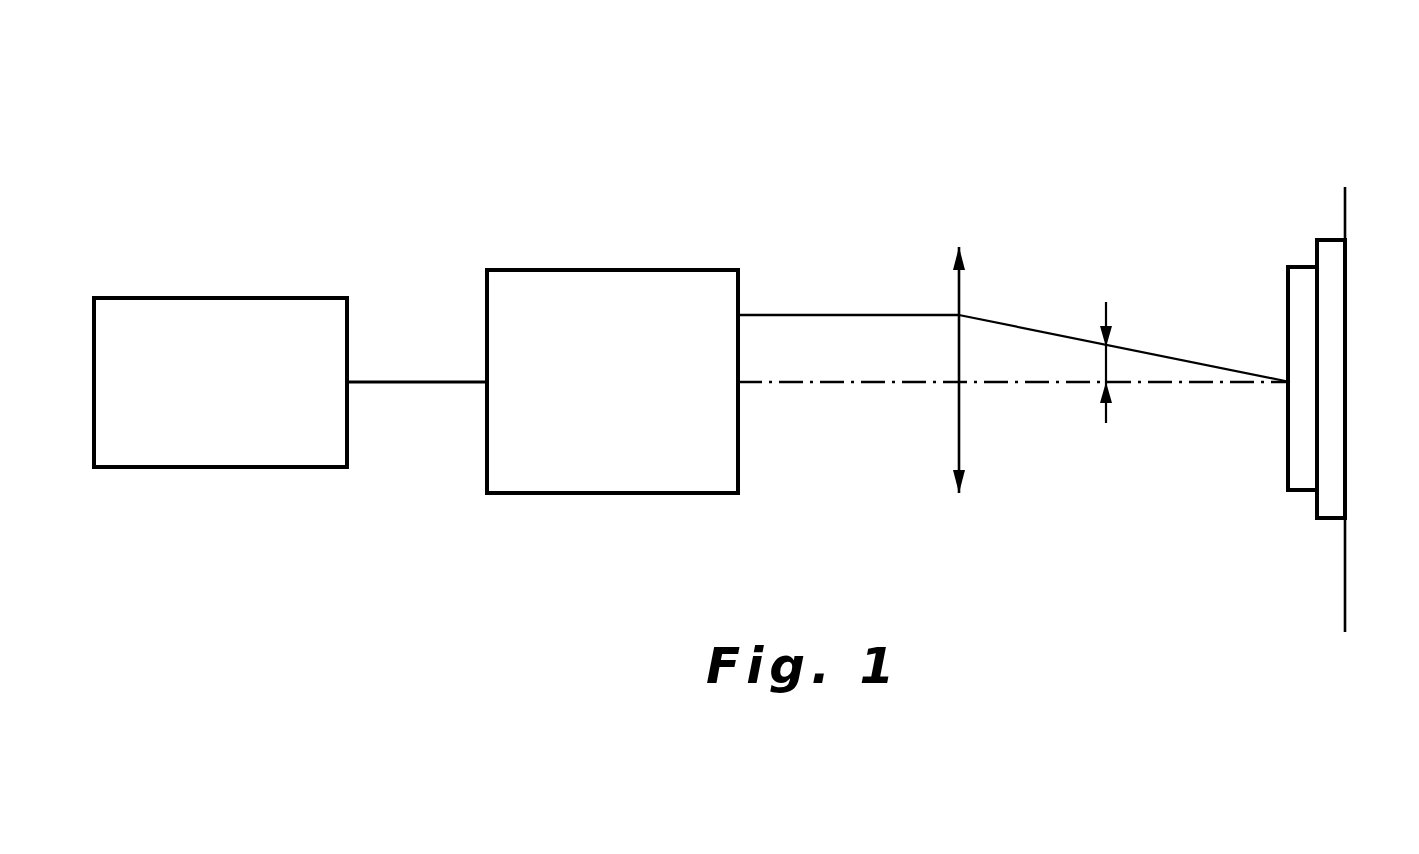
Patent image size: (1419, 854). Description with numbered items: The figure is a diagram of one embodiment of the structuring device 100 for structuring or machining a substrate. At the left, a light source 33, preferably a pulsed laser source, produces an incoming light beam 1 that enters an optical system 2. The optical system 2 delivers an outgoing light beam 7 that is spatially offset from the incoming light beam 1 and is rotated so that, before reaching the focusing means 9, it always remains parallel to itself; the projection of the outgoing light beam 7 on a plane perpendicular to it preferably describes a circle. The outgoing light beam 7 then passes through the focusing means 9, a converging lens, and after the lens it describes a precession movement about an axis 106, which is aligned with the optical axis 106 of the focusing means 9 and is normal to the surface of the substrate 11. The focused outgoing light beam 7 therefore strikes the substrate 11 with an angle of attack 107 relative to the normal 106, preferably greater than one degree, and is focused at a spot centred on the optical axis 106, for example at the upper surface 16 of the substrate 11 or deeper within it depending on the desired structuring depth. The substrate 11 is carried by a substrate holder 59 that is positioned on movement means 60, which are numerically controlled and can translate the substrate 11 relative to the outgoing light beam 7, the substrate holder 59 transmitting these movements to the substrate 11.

The structuring device 100 is at (232, 144).
The light source 33 is at (235, 296).
The incoming light beam 1 is at (382, 380).
The optical system 2 is at (592, 268).
The outgoing light beam 7 is at (825, 313).
The focusing means 9 is at (962, 245).
The angle of attack 107 is at (1103, 357).
The optical axis 106 is at (1065, 385).
The movement means 60 is at (1348, 242).
The substrate 11 is at (1302, 348).
The upper surface 16 is at (1287, 442).
The substrate holder 59 is at (1330, 505).